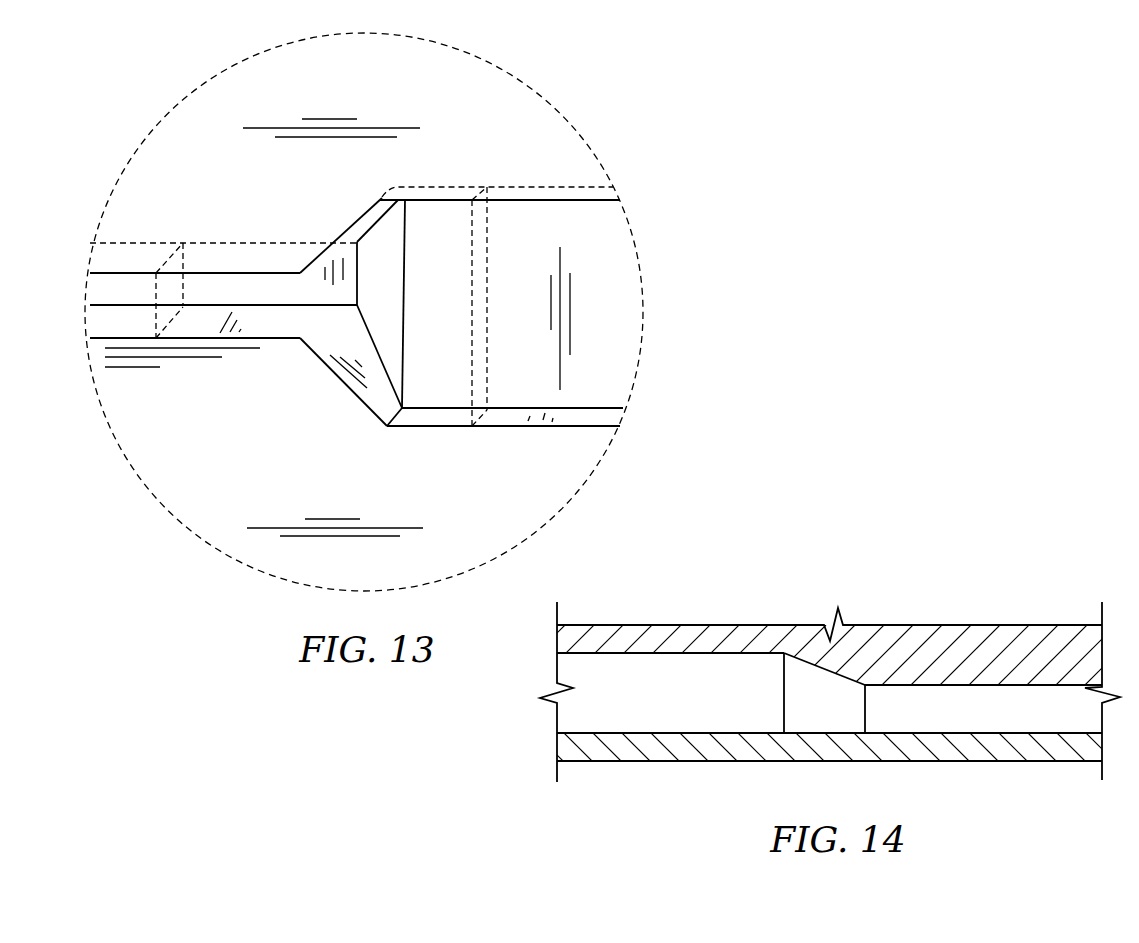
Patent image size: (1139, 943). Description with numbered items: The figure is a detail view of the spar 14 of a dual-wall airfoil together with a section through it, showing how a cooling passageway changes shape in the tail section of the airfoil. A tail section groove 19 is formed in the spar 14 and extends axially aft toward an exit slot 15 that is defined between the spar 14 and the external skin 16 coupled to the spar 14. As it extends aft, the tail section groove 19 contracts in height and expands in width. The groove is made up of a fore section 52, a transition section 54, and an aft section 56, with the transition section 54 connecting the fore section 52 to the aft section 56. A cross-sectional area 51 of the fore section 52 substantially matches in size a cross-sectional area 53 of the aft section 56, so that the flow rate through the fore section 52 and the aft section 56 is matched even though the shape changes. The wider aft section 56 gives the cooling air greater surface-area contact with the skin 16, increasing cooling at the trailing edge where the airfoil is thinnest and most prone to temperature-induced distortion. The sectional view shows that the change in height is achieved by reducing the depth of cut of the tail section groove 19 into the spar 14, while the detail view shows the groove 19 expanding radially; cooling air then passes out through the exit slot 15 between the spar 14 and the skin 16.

In FIG. 13, the spar 14 is at (470, 89).
In FIG. 14, the spar 14 is at (630, 630).
In FIG. 13, the exit slot 15 is at (632, 287).
In FIG. 14, the exit slot 15 is at (1063, 707).
In FIG. 14, the skin 16 is at (671, 754).
In FIG. 13, the tail section groove 19 is at (115, 291).
In FIG. 14, the tail section groove 19 is at (600, 718).
In FIG. 13, the cross-sectional area of the fore section 51 is at (166, 323).
In FIG. 13, the fore section 52 is at (222, 290).
In FIG. 14, the fore section 52 is at (690, 671).
In FIG. 13, the cross-sectional area of the aft section 53 is at (468, 398).
In FIG. 13, the transition section 54 is at (378, 252).
In FIG. 14, the transition section 54 is at (826, 692).
In FIG. 13, the aft section 56 is at (540, 232).
In FIG. 14, the aft section 56 is at (917, 712).